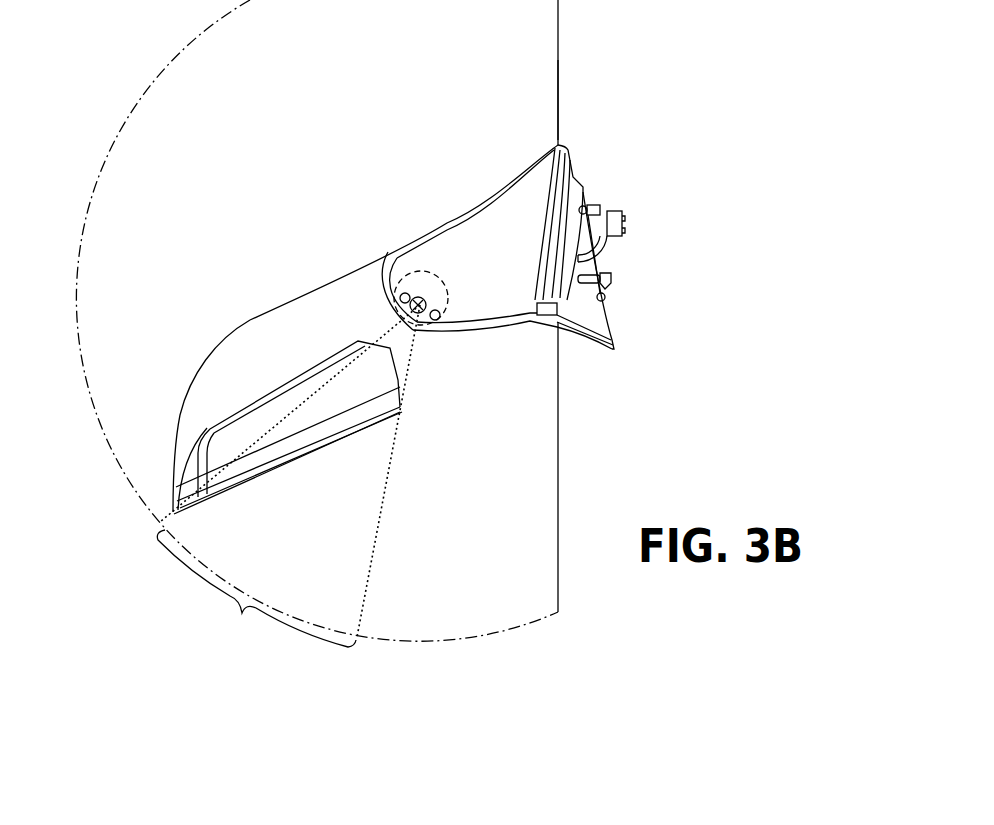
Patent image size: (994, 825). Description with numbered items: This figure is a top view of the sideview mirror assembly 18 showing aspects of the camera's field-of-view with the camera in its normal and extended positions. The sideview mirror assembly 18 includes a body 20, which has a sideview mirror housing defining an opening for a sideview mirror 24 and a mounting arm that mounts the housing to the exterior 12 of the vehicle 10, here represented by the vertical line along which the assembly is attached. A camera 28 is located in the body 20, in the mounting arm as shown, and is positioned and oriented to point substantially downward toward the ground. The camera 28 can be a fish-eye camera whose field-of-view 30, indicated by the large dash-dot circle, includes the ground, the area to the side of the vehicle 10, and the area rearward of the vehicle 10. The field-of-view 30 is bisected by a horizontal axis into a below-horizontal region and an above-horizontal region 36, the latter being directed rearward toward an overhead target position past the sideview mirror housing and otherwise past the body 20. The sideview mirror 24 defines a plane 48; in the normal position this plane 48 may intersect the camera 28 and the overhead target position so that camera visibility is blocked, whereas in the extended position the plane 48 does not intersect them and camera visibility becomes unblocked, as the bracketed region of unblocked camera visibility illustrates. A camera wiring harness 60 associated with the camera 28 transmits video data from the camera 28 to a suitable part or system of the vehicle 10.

The vehicle 10 is at (558, 2).
The exterior 12 is at (558, 97).
The sideview mirror assembly 18 is at (335, 317).
The body 20 is at (255, 335).
The sideview mirror 24 is at (357, 430).
The camera 28 is at (425, 318).
The field-of-view 30 is at (170, 63).
The above-horizontal region 36 is at (245, 609).
The plane 48 is at (293, 457).
The camera wiring harness 60 is at (603, 253).